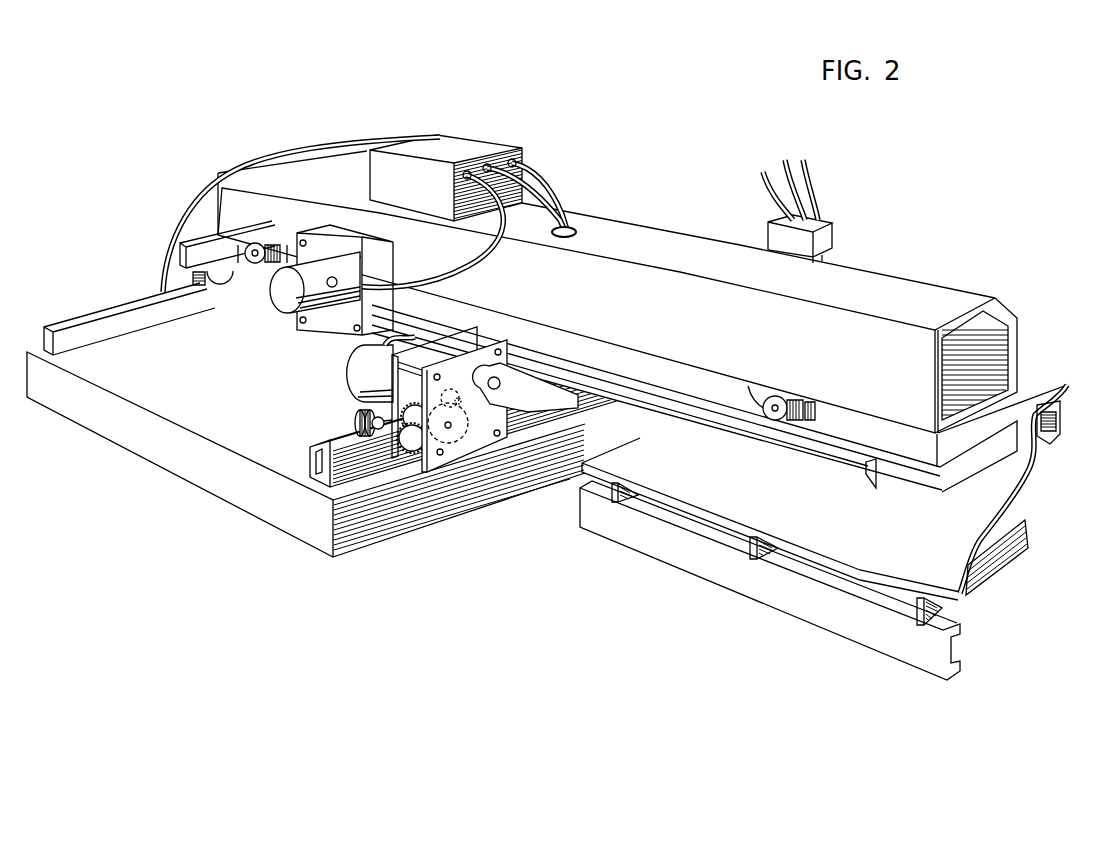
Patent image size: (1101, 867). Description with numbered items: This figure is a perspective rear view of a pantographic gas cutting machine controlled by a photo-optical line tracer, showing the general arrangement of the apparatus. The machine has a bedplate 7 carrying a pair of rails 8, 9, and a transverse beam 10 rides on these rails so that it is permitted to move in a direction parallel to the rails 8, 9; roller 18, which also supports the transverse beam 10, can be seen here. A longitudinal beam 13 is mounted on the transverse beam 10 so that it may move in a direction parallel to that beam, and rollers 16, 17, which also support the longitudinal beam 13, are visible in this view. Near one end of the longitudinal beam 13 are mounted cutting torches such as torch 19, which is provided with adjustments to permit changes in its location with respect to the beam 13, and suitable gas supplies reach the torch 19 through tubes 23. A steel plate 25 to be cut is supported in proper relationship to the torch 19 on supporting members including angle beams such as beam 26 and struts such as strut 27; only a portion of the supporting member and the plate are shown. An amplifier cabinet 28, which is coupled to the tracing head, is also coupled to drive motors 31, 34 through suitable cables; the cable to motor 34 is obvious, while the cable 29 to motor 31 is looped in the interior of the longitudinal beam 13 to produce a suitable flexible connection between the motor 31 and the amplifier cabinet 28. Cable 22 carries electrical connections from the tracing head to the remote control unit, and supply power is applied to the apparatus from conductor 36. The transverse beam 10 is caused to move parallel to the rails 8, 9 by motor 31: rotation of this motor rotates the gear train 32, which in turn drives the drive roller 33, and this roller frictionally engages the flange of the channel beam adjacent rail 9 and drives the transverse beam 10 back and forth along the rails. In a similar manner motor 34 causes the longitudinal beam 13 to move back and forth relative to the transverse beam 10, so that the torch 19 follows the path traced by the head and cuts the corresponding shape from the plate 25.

The bedplate 7 is at (190, 468).
The rail 8 is at (75, 325).
The rail 9 is at (310, 461).
The transverse beam 10 is at (907, 478).
The longitudinal beam 13 is at (897, 285).
The roller 16 is at (258, 245).
The roller 17 is at (785, 397).
The roller 18 is at (220, 286).
The cutting torch 19 is at (830, 240).
The cable 22 is at (330, 142).
The tubes 23 is at (802, 158).
The steel plate 25 is at (1000, 517).
The angle beam 26 is at (620, 532).
The strut 27 is at (756, 556).
The amplifier cabinet 28 is at (497, 146).
The cable 29 is at (547, 202).
The drive motor 31 is at (350, 368).
The gear train 32 is at (455, 423).
The drive roller 33 is at (355, 421).
The drive motor 34 is at (284, 306).
The conductor 36 is at (537, 167).